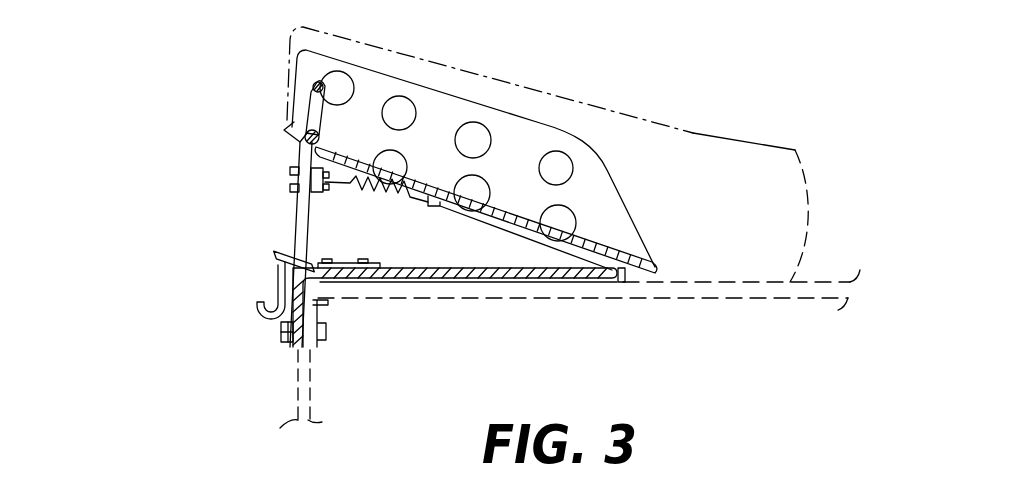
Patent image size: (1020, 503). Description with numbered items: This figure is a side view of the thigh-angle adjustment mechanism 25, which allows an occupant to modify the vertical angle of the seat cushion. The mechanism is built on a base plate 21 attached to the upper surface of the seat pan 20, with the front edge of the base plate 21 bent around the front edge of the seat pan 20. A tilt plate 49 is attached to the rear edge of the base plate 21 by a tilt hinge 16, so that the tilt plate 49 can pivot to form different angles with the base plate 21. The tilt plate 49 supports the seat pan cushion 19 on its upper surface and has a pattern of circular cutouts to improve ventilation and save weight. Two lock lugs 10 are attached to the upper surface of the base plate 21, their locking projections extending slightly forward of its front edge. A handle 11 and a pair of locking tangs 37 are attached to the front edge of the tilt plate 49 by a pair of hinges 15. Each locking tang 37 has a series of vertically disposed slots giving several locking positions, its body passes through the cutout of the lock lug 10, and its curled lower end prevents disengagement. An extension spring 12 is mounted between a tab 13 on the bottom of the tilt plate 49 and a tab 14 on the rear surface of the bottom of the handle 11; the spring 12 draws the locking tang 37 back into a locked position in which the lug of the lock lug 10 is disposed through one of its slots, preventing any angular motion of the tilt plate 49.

The lock lug 10 is at (278, 252).
The handle 11 is at (320, 84).
The extension spring 12 is at (380, 198).
The tab 13 is at (458, 210).
The tab 14 is at (322, 195).
The hinge 15 is at (297, 133).
The tilt hinge 16 is at (624, 282).
The seat pan cushion 19 is at (702, 163).
The seat pan 20 is at (298, 370).
The base plate 21 is at (527, 280).
The thigh-angle adjustment mechanism 25 is at (262, 127).
The locking tang 37 is at (290, 212).
The tilt plate 49 is at (592, 197).